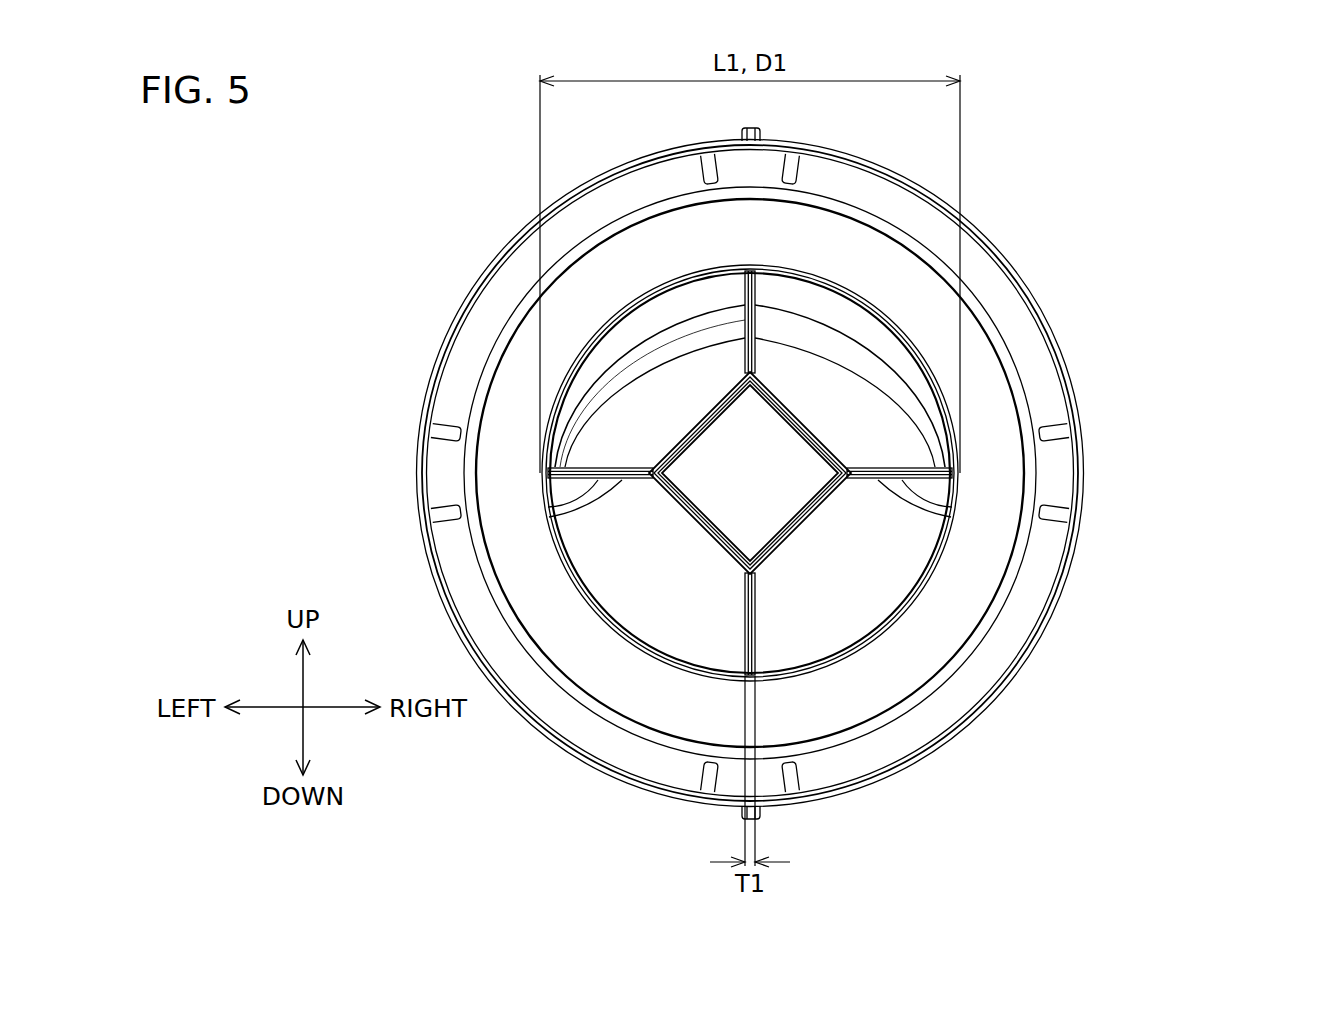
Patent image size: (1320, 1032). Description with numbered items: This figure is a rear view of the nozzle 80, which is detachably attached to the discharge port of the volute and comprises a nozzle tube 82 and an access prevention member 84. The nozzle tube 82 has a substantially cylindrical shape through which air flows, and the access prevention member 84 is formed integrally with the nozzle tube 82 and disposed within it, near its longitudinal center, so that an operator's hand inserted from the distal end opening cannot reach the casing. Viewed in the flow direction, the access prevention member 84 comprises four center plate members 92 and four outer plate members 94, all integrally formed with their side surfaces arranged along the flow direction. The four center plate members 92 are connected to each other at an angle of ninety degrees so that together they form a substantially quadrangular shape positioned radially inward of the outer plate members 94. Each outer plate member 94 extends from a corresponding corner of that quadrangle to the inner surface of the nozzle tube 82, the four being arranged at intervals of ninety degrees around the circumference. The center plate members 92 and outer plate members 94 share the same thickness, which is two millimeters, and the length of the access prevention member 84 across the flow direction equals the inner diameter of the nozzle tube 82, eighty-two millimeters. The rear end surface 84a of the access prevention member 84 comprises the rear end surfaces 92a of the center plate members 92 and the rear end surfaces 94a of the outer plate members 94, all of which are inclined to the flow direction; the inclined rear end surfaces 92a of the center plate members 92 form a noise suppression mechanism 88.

The nozzle 80 is at (989, 192).
The nozzle tube 82 is at (862, 243).
The access prevention member 84 is at (728, 312).
The rear end surface of the access prevention member 84a is at (778, 300).
The noise suppression mechanism 88 is at (695, 391).
The center plate member 92 is at (822, 443).
The rear end surface of the center plate member 92a is at (675, 452).
The outer plate member 94 is at (953, 473).
The rear end surface of the outer plate member 94a is at (757, 345).